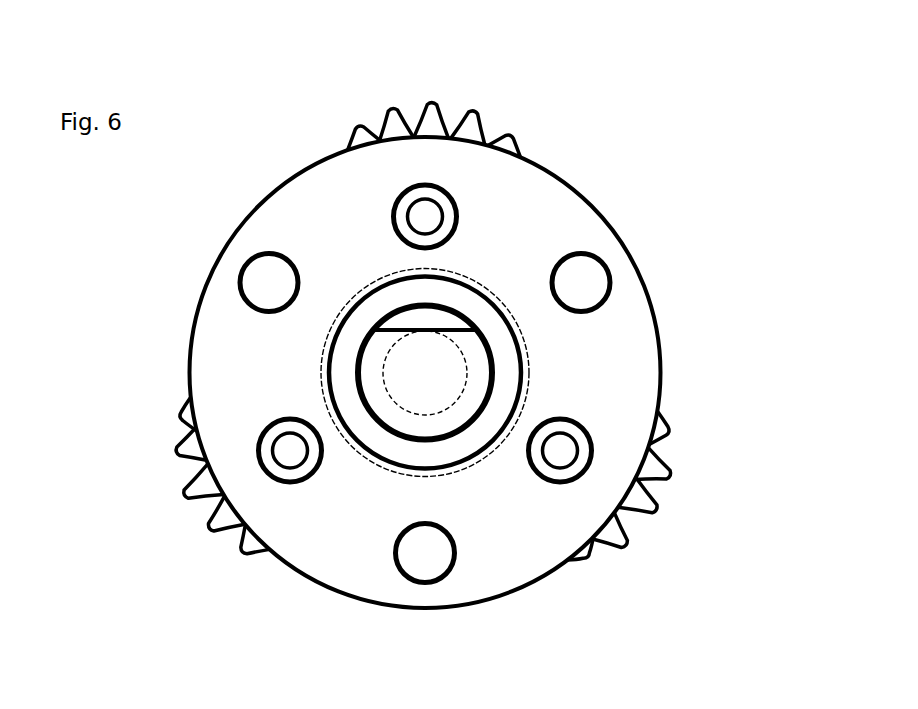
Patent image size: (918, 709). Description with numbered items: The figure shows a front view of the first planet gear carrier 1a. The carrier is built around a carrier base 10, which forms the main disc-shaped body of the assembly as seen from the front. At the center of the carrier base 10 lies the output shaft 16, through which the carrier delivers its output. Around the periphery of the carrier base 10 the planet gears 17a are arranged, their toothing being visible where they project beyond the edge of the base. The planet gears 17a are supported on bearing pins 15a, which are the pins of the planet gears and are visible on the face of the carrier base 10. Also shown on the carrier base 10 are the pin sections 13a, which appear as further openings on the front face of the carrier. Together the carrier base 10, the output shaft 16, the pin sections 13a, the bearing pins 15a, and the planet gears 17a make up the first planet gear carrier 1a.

The first planet gear carrier 1a is at (705, 107).
The carrier base 10 is at (616, 383).
The pin sections 13a is at (580, 280).
The bearing pins 15a is at (558, 450).
The output shaft 16 is at (440, 383).
The planet gears 17a is at (436, 122).